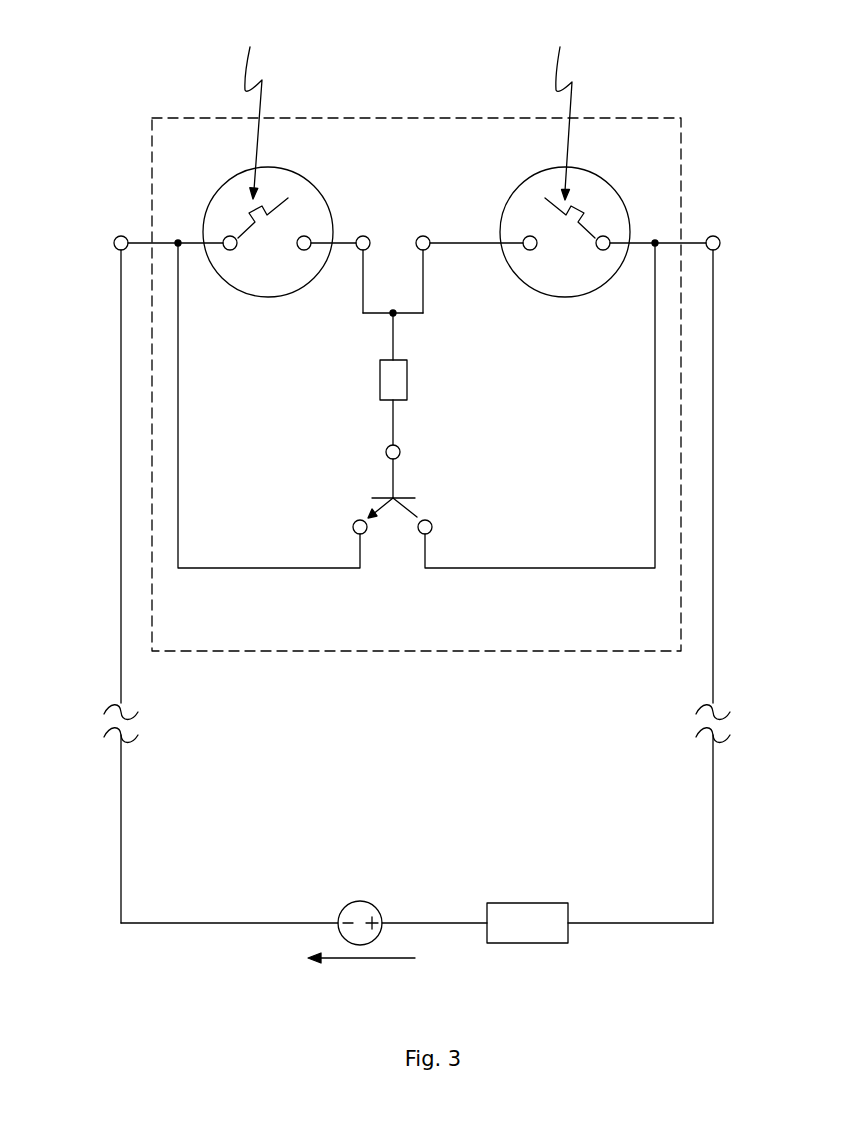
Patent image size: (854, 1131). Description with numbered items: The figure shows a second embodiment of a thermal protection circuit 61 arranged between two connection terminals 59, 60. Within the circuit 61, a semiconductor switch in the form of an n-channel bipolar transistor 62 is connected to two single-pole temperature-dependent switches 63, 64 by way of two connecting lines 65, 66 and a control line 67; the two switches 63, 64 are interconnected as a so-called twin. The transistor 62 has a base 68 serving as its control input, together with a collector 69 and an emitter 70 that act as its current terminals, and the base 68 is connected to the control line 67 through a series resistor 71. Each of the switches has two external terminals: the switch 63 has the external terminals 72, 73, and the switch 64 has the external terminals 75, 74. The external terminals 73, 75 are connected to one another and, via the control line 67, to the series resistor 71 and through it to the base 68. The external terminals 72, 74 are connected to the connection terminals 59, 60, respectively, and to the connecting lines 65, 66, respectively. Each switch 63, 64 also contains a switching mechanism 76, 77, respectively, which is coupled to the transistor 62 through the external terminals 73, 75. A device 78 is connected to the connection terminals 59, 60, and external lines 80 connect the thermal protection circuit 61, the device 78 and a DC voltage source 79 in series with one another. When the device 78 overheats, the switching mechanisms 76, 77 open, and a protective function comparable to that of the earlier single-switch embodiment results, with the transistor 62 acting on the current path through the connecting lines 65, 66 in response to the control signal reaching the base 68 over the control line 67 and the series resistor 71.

The connection terminal 59 is at (121, 237).
The connection terminal 60 is at (713, 236).
The thermal protection circuit 61 is at (612, 118).
The n-channel bipolar transistor 62 is at (425, 460).
The single-pole temperature-dependent switch 63 is at (312, 178).
The single-pole temperature-dependent switch 64 is at (522, 181).
The connecting line 65 is at (178, 408).
The connecting line 66 is at (655, 408).
The control line 67 is at (395, 340).
The base 68 is at (393, 472).
The collector 69 is at (414, 514).
The emitter 70 is at (372, 503).
The series resistor 71 is at (380, 378).
The external terminal 72 is at (228, 250).
The external terminal 73 is at (306, 250).
The external terminal 74 is at (605, 250).
The external terminal 75 is at (528, 250).
The switching mechanism 76 is at (248, 110).
The switching mechanism 77 is at (560, 110).
The device 78 is at (538, 943).
The DC voltage source 79 is at (361, 960).
The external lines 80 is at (120, 820).